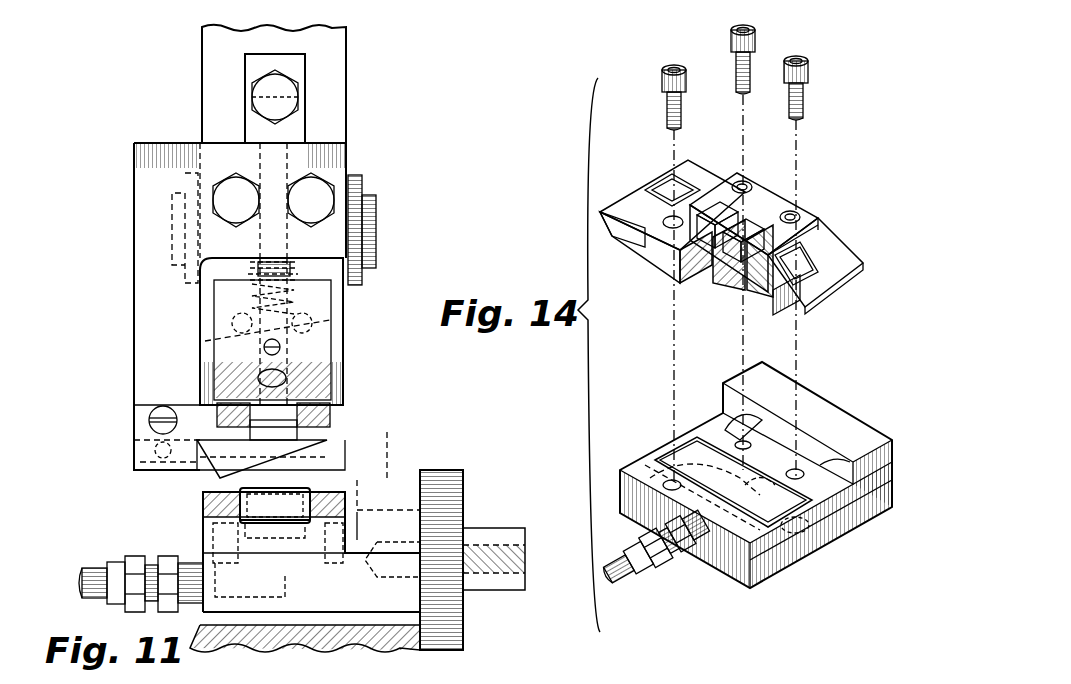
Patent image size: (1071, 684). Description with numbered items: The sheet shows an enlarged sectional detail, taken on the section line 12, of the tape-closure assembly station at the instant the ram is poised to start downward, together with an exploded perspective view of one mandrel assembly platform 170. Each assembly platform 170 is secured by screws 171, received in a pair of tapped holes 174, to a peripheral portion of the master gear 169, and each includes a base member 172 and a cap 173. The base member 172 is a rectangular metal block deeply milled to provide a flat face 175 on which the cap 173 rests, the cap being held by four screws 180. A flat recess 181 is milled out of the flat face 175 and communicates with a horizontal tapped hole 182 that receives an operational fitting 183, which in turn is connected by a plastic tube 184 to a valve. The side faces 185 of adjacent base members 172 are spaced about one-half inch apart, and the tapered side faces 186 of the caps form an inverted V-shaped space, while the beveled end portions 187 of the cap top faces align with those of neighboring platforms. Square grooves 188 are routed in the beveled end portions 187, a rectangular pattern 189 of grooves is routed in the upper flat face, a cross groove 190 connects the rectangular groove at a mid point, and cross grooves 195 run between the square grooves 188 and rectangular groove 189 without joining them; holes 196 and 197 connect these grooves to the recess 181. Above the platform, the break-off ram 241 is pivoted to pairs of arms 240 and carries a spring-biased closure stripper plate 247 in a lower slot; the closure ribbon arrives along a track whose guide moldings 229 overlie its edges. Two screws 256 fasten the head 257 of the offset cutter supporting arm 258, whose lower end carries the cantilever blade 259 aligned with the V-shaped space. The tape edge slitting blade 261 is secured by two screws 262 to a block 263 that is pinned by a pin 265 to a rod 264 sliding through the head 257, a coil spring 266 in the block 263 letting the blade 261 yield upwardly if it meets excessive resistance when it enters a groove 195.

In FIG. 11, the FIG. 12 section line 12 is at (385, 100).
In FIG. 11, the master gear 169 is at (455, 626).
In FIG. 11, the assembly platform 170 is at (432, 472).
In FIG. 11, the screws 171 is at (490, 545).
In FIG. 11, the base member 172 is at (403, 523).
In FIG. 14, the base member 172 is at (738, 575).
In FIG. 11, the cap 173 is at (203, 532).
In FIG. 14, the cap 173 is at (810, 200).
In FIG. 14, the tapped holes 174 is at (722, 423).
In FIG. 14, the flat face 175 is at (645, 466).
In FIG. 14, the screws 180 is at (730, 103).
In FIG. 14, the flat recess 181 is at (780, 513).
In FIG. 14, the tapped hole 182 is at (652, 478).
In FIG. 11, the operational fitting 183 is at (135, 556).
In FIG. 14, the operational fitting 183 is at (686, 556).
In FIG. 11, the plastic tube 184 is at (100, 568).
In FIG. 14, the plastic tube 184 is at (633, 577).
In FIG. 14, the side faces 185 is at (790, 562).
In FIG. 14, the side faces 186 is at (615, 238).
In FIG. 14, the end portions 187 is at (632, 202).
In FIG. 14, the grooves 188 is at (662, 183).
In FIG. 14, the rectangular pattern of grooves 189 is at (763, 183).
In FIG. 14, the cross groove 190 is at (790, 212).
In FIG. 14, the cross grooves 195 is at (800, 228).
In FIG. 14, the holes 196 is at (786, 302).
In FIG. 14, the holes 197 is at (718, 272).
In FIG. 11, the guide moldings 229 is at (392, 492).
In FIG. 11, the arms 240 is at (356, 188).
In FIG. 11, the break-off ram 241 is at (338, 128).
In FIG. 11, the closure stripper plate 247 is at (300, 432).
In FIG. 11, the screws 256 is at (305, 190).
In FIG. 11, the head 257 is at (340, 157).
In FIG. 11, the cutter supporting arm 258 is at (150, 300).
In FIG. 11, the blade 259 is at (207, 450).
In FIG. 11, the tape edge slitting blade 261 is at (230, 413).
In FIG. 11, the screws 262 is at (206, 340).
In FIG. 11, the block 263 is at (214, 353).
In FIG. 11, the rod 264 is at (290, 268).
In FIG. 11, the pin 265 is at (284, 347).
In FIG. 11, the coil spring 266 is at (262, 272).